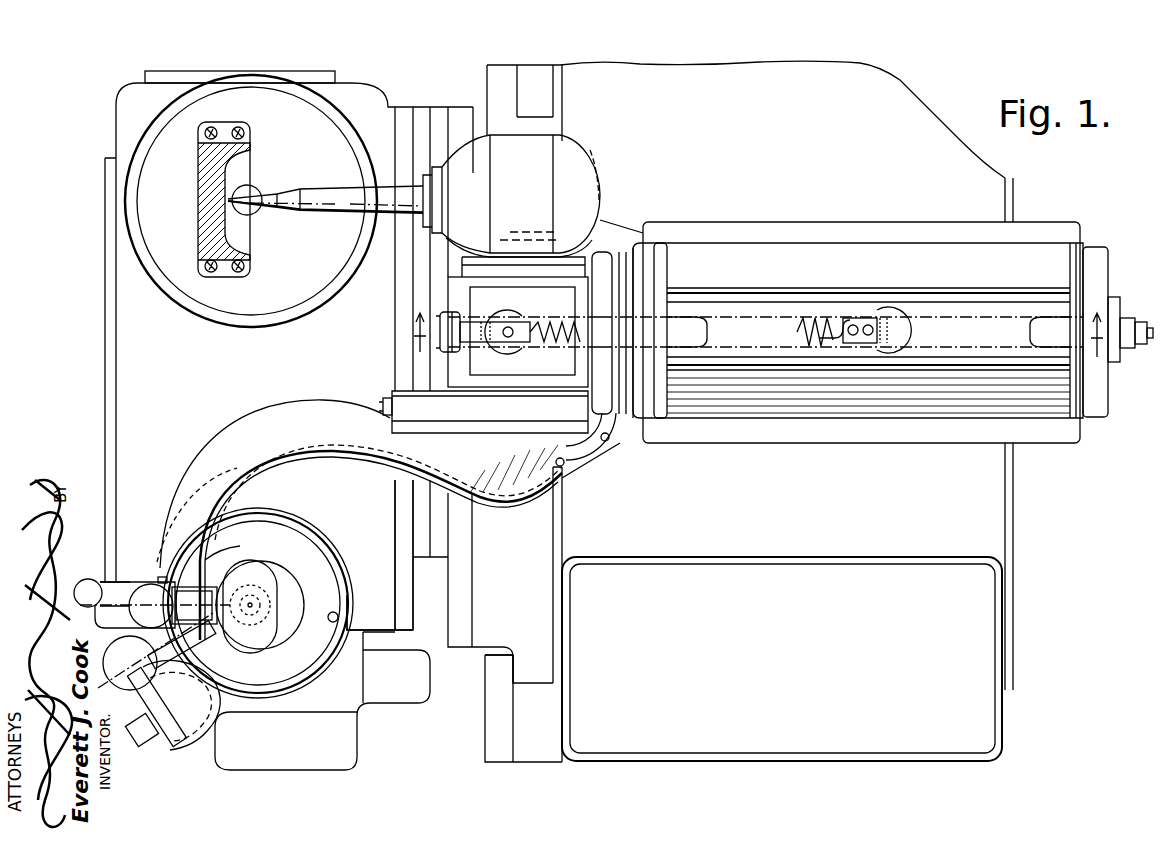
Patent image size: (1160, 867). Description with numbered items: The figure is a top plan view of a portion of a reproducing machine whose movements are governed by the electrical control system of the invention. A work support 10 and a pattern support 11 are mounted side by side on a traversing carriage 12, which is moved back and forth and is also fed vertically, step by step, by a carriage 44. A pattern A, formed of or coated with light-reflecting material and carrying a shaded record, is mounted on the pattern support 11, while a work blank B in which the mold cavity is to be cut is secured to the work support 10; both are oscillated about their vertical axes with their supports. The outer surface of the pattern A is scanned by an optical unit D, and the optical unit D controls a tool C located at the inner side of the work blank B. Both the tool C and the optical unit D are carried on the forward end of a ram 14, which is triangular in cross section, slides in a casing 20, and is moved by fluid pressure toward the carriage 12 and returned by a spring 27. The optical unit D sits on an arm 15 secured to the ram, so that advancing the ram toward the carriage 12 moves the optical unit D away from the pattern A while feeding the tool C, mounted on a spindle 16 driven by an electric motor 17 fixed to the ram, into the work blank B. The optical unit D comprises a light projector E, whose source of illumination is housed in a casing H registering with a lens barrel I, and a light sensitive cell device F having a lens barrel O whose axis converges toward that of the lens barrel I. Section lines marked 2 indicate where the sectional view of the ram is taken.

The work support 10 is at (310, 300).
The spindle 16 is at (347, 193).
The work blank B is at (200, 221).
The tool C is at (257, 190).
The ram 14 is at (480, 293).
The electric motor 17 is at (586, 162).
The casing 20 is at (798, 253).
The spring 27 is at (818, 327).
The section line 2 is at (758, 344).
The arm 15 is at (253, 423).
The pattern support 11 is at (313, 563).
The traversing carriage 12 is at (405, 575).
The carriage 44 is at (495, 625).
The pattern A is at (272, 638).
The lens barrel I is at (212, 567).
The casing H is at (101, 580).
The optical unit D is at (142, 575).
The light projector E is at (189, 580).
The lens barrel O is at (192, 648).
The light sensitive cell device F is at (131, 705).